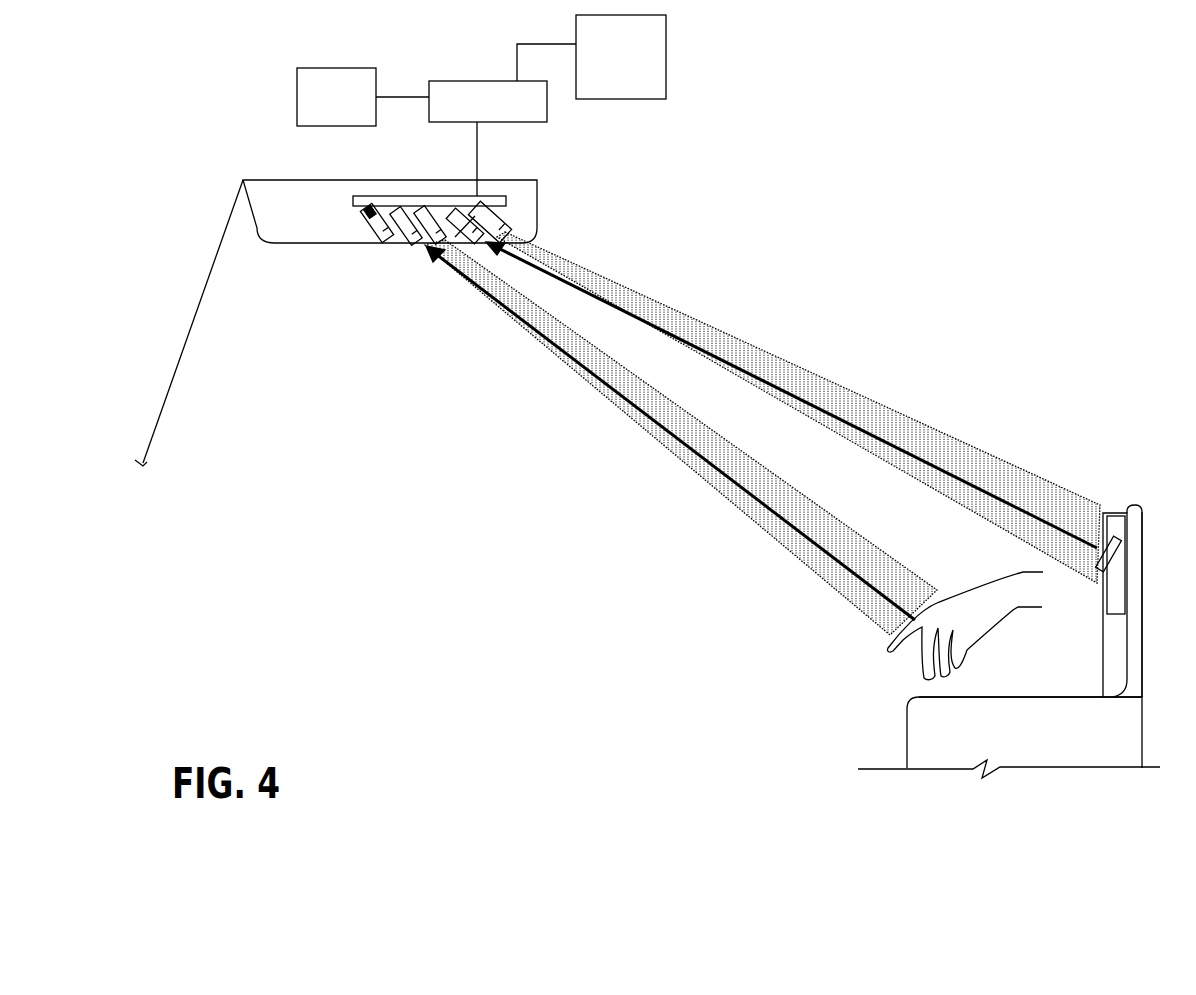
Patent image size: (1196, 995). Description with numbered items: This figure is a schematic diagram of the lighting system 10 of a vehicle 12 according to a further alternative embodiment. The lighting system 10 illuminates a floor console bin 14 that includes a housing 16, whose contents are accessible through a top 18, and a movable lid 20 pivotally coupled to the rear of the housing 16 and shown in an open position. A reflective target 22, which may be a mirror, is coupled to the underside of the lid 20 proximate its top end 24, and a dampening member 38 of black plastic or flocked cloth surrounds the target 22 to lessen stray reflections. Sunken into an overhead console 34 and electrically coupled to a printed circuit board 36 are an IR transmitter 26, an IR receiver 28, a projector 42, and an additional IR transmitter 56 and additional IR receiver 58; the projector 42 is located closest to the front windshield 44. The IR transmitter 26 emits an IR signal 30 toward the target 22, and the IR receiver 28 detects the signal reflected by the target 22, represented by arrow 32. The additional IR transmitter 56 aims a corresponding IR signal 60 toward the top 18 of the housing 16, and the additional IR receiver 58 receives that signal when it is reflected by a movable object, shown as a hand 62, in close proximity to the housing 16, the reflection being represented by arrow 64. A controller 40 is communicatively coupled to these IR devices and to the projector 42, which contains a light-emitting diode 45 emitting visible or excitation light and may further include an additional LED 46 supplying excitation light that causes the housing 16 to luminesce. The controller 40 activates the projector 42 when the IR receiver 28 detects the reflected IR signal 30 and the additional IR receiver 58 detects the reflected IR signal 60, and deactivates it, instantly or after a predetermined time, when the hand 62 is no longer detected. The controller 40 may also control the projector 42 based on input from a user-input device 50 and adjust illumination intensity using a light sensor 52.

The lighting system 10 is at (742, 217).
The vehicle 12 is at (988, 142).
The floor console bin 14 is at (1160, 698).
The housing 16 is at (907, 738).
The top 18 is at (993, 696).
The lid 20 is at (1142, 593).
The reflective target 22 is at (1100, 535).
The top end 24 is at (1123, 508).
The IR transmitter 26 is at (512, 212).
The IR receiver 28 is at (432, 236).
The IR signal 30 is at (722, 332).
The reflected IR signal arrow 32 is at (628, 315).
The overhead console 34 is at (277, 179).
The printed circuit board 36 is at (405, 197).
The dampening member 38 is at (1103, 600).
The controller 40 is at (467, 80).
The projector 42 is at (398, 226).
The front windshield 44 is at (202, 282).
The light-emitting diode 45 is at (372, 228).
The additional LED 46 is at (360, 198).
The user-input device 50 is at (666, 67).
The light sensor 52 is at (297, 96).
The additional IR transmitter 56 is at (418, 243).
The additional IR receiver 58 is at (400, 238).
The IR signal 60 is at (740, 463).
The hand 62 is at (970, 593).
The reflected IR signal arrow 64 is at (493, 300).